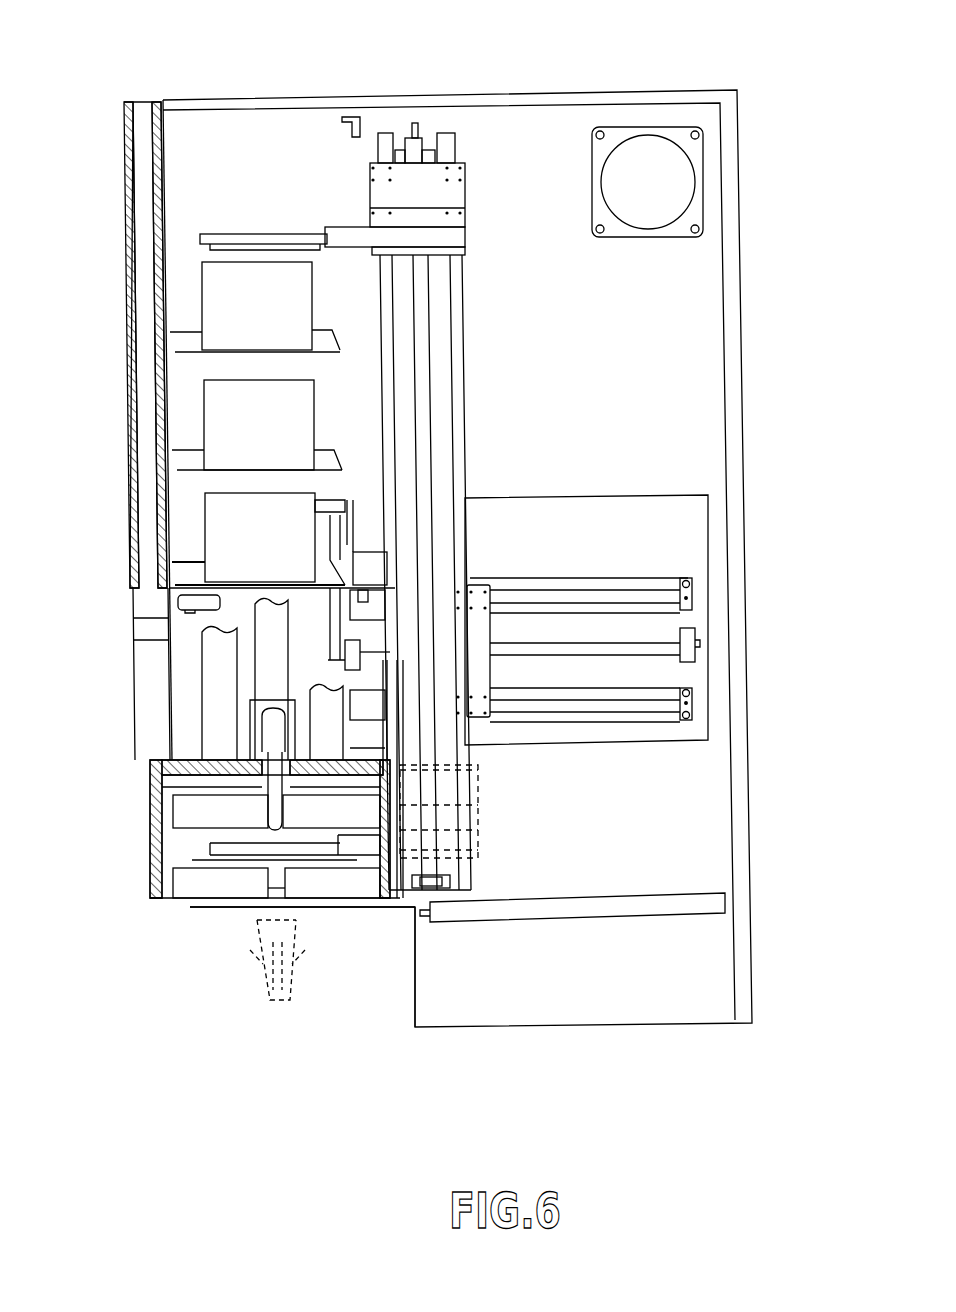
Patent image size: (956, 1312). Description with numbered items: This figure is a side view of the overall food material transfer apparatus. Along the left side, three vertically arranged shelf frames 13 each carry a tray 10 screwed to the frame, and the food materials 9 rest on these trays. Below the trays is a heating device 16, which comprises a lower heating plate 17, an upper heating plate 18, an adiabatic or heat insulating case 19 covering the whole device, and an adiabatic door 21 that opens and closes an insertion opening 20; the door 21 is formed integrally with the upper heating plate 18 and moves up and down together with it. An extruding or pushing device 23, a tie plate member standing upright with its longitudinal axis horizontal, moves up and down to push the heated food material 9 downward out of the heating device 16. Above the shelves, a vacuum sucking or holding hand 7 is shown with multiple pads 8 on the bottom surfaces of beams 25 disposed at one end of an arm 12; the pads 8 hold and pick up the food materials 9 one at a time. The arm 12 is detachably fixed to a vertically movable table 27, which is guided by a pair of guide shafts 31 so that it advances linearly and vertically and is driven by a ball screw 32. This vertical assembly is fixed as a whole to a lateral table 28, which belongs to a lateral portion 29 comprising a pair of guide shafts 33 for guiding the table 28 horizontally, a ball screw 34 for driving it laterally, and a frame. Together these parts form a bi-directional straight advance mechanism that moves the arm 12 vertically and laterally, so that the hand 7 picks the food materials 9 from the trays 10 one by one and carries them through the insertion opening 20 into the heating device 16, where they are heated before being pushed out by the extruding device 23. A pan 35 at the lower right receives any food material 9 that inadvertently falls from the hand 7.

The vacuum sucking hand 7 is at (267, 233).
The pads 8 is at (200, 250).
The food material 9 is at (187, 254).
The tray 10 is at (215, 418).
The arm 12 is at (350, 235).
The shelf frame 13 is at (180, 458).
The heating device 16 is at (150, 830).
The lower heating plate 17 is at (237, 892).
The upper heating plate 18 is at (208, 827).
The adiabatic case 19 is at (150, 853).
The insertion opening 20 is at (390, 843).
The adiabatic door 21 is at (393, 788).
The extruding device 23 is at (285, 1000).
The beams 25 is at (200, 242).
The vertically movable table 27 is at (465, 190).
The lateral table 28 is at (480, 625).
The lateral portion 29 is at (712, 560).
The guide shafts 31 is at (395, 397).
The ball screw 32 is at (428, 297).
The guide shafts 33 is at (682, 598).
The ball screw 34 is at (527, 647).
The pan 35 is at (697, 915).